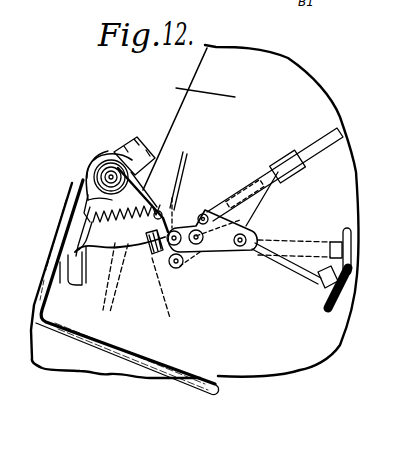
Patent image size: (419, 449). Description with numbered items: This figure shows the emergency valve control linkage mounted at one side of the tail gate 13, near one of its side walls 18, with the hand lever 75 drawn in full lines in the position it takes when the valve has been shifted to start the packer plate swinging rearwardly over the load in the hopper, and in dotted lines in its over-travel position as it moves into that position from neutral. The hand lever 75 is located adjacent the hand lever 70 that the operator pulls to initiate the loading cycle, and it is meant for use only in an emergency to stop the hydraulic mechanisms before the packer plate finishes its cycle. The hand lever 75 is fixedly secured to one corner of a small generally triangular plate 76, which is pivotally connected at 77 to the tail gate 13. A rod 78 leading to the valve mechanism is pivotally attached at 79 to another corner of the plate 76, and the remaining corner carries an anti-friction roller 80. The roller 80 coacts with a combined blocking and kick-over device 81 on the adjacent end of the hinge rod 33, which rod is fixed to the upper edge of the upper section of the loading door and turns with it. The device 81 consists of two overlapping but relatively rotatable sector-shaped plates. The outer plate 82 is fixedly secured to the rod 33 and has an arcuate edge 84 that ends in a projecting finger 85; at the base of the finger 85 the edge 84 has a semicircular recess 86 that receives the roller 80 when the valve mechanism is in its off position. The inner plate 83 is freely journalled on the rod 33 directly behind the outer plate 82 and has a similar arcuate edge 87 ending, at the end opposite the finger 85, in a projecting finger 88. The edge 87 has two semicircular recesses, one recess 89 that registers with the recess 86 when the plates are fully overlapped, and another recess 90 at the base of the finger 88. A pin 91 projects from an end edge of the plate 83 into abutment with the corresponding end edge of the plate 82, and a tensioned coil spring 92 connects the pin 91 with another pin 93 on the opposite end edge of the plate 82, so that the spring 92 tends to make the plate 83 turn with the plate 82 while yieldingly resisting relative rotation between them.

The tail gate 13 is at (195, 66).
The side walls 18 is at (192, 88).
The rod 33 is at (95, 158).
The hand lever 70 is at (153, 378).
The hand lever 75 is at (301, 282).
The triangular plate 76 is at (220, 250).
The pivotal connection 77 is at (252, 232).
The rod 78 is at (308, 136).
The pivotal attachment 79 is at (204, 214).
The anti-friction roller 80 is at (180, 203).
The combined blocking and kick-over device 81 is at (184, 150).
The outer plate 82 is at (135, 148).
The inner plate 83 is at (172, 284).
The arcuate edge 84 is at (118, 276).
The finger 85 is at (60, 273).
The semicircular recess 86 is at (69, 278).
The arcuate edge 87 is at (117, 278).
The finger 88 is at (188, 272).
The semicircular recess 89 is at (56, 251).
The semicircular recess 90 is at (169, 299).
The pin 91 is at (168, 190).
The coil spring 92 is at (78, 176).
The pin 93 is at (76, 212).